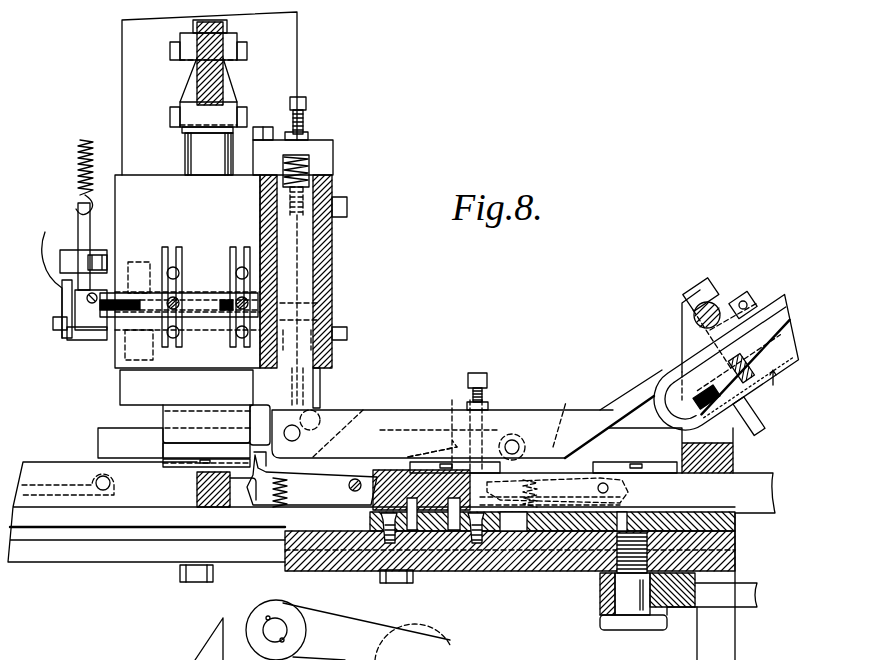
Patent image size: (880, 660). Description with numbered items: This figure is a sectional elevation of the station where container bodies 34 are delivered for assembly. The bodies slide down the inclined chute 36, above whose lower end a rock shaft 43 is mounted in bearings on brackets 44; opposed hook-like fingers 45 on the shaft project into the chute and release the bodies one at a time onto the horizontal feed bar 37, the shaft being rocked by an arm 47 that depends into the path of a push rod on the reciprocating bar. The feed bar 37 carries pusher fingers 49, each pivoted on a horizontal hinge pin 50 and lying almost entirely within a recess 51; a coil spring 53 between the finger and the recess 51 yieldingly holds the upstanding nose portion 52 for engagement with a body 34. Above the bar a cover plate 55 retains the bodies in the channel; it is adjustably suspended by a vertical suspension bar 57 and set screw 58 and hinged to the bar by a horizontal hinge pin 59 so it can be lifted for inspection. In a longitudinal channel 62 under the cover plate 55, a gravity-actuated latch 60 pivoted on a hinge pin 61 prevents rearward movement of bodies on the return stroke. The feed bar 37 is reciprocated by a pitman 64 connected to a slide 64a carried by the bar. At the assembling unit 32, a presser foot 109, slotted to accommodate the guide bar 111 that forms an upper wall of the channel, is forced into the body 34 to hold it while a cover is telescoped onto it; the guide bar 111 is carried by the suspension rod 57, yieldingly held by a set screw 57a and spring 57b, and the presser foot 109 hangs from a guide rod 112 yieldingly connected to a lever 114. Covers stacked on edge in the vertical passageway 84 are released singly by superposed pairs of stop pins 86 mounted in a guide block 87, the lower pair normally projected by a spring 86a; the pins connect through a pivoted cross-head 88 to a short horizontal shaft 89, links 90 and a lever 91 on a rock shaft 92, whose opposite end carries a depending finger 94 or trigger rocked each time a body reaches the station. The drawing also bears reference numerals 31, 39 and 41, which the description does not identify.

The rod 31 is at (700, 648).
The assembling unit 32 is at (368, 117).
The container body portions 34 is at (185, 462).
The chute 36 is at (774, 382).
The feed bar 37 is at (772, 468).
The block 39 is at (766, 362).
The channel 41 is at (762, 338).
The rock shaft 43 is at (694, 313).
The brackets 44 is at (716, 300).
The hook-like fingers 45 is at (662, 388).
The arm 47 is at (757, 413).
The pusher fingers 49 is at (451, 481).
The hinge pin 50 is at (358, 480).
The recess 51 is at (247, 500).
The nose portion 52 is at (258, 452).
The coil spring 53 is at (282, 500).
The cover plate 55 is at (408, 413).
The suspension bar 57 is at (300, 383).
The set screw 57a is at (303, 113).
The spring 57b is at (307, 163).
The adjustable set screw 58 is at (487, 385).
The hinge pin 59 is at (292, 441).
The gravity actuated latch 60 is at (452, 402).
The hinge pin 61 is at (512, 440).
The longitudinal channel 62 is at (568, 417).
The pitman 64 is at (745, 595).
The slide 64a is at (497, 562).
The vertical guideway 84 is at (283, 47).
The stop pins 86 is at (236, 273).
The spring 86a is at (75, 162).
The guide block 87 is at (200, 208).
The pivoted cross-head 88 is at (232, 250).
The short horizontal shaft 89 is at (113, 303).
The links 90 is at (80, 230).
The lever 91 is at (76, 338).
The rock shaft 92 is at (53, 323).
The depending finger 94 is at (318, 390).
The presser foot 109 is at (220, 398).
The guide bar 111 is at (328, 237).
The guide rod 112 is at (207, 155).
The lever 114 is at (207, 67).